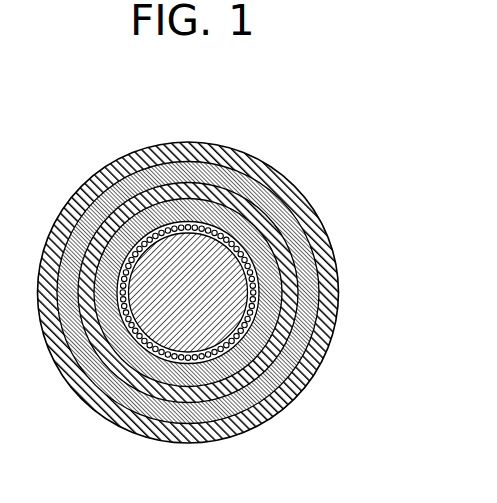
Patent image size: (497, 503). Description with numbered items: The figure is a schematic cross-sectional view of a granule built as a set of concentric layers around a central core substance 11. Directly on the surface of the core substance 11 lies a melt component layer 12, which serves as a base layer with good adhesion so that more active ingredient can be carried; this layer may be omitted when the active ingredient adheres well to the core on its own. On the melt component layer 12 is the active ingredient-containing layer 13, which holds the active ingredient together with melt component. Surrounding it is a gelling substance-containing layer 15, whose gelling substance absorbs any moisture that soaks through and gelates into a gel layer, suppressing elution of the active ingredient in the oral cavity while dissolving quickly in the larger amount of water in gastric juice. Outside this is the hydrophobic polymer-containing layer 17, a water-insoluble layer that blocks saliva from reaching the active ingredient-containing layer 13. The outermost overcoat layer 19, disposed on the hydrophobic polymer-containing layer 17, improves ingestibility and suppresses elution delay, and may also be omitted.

The core substance 11 is at (340, 315).
The melt component layer 12 is at (335, 270).
The active ingredient-containing layer 13 is at (320, 225).
The gelling substance-containing layer 15 is at (333, 345).
The hydrophobic polymer-containing layer 17 is at (293, 177).
The overcoat layer 19 is at (310, 385).